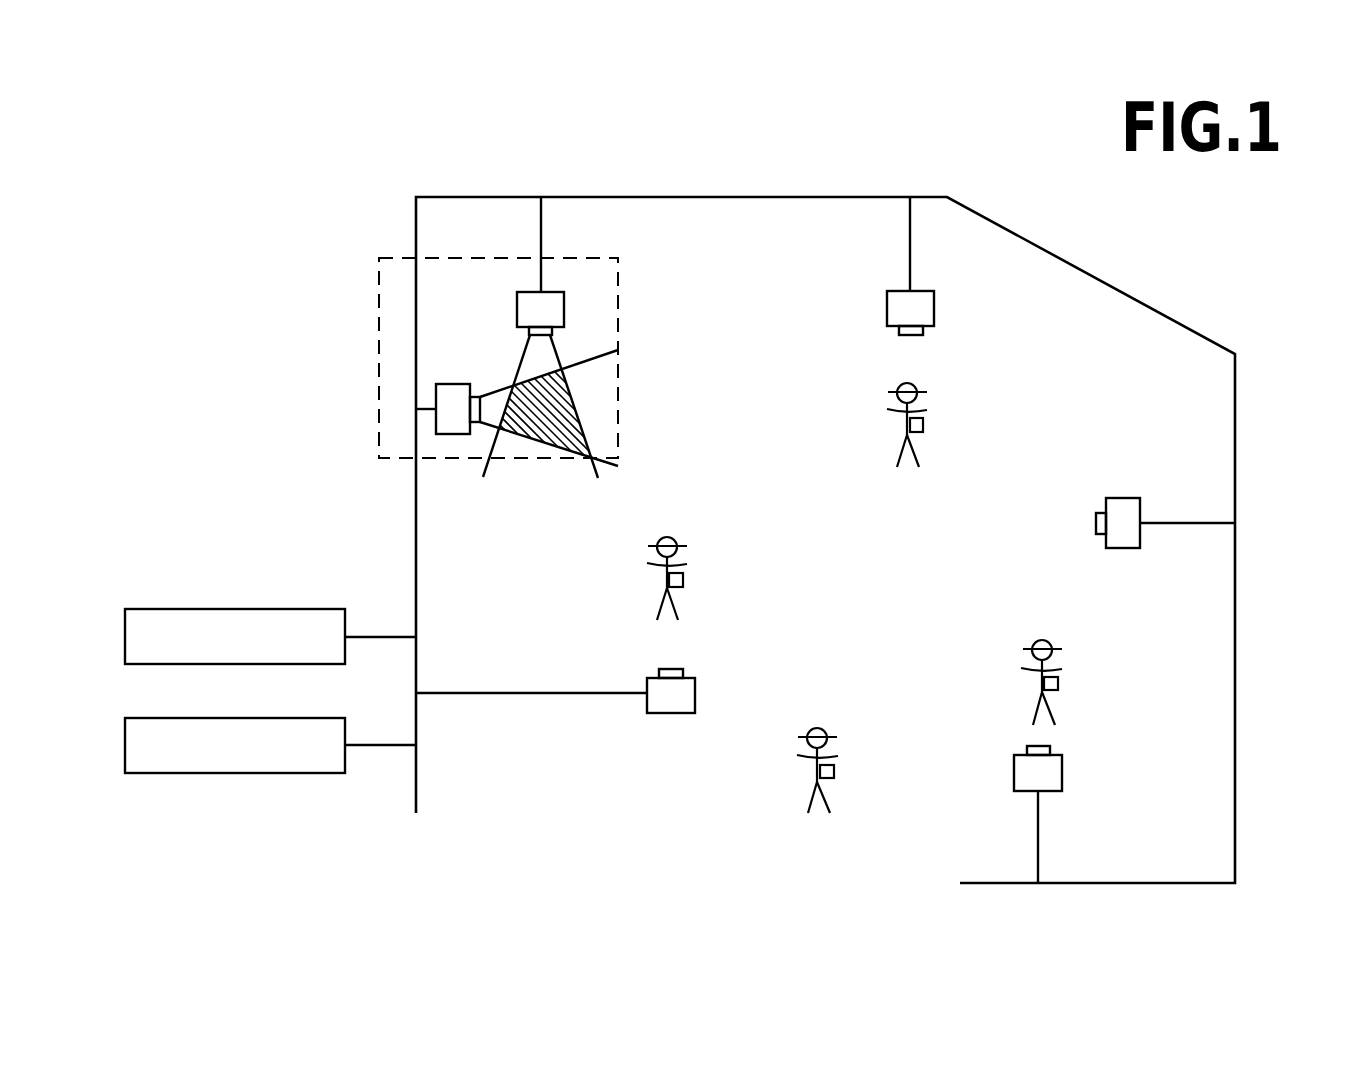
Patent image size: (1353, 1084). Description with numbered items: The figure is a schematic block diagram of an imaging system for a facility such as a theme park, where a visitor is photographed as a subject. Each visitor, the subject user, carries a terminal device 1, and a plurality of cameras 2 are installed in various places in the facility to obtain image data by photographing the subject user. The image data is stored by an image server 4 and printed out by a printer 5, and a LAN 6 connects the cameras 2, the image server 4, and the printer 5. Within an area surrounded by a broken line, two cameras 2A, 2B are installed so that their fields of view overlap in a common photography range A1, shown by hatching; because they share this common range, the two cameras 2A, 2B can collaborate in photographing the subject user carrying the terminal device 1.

The terminal device 1 is at (927, 425).
The cameras 2 is at (928, 308).
The camera 2A is at (449, 430).
The camera 2B is at (560, 312).
The common photography range A1 is at (563, 443).
The image server 4 is at (317, 609).
The printer 5 is at (322, 718).
The LAN 6 is at (416, 795).